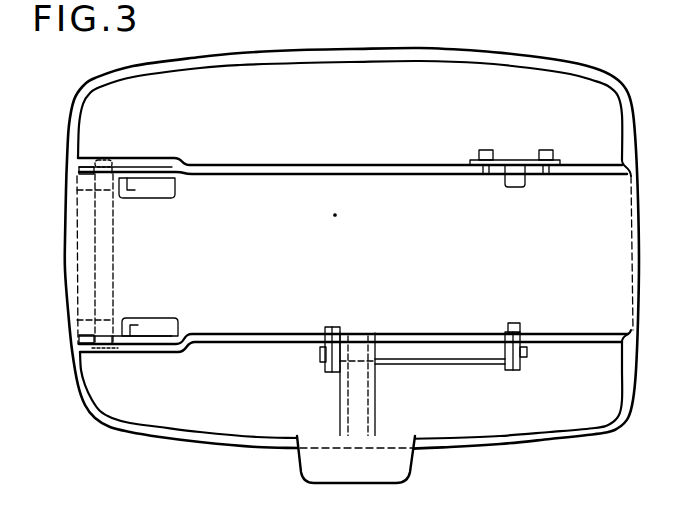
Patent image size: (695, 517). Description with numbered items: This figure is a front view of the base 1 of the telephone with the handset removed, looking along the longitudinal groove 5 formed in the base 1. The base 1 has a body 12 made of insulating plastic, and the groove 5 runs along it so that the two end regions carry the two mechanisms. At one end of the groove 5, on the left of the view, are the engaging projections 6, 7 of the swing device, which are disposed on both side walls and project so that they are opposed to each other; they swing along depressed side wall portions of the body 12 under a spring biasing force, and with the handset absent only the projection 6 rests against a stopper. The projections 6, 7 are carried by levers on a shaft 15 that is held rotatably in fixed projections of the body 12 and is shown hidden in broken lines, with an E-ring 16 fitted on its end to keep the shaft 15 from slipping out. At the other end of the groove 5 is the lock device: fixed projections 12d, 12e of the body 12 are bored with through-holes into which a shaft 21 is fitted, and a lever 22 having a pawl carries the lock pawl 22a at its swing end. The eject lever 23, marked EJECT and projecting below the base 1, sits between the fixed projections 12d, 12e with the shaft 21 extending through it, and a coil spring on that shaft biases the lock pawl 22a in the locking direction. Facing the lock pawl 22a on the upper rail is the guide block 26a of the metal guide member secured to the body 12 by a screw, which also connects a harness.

The base 1 is at (529, 52).
The body 12 is at (339, 127).
The groove 5 is at (343, 260).
The E-ring 16 is at (118, 160).
The engaging projection 7 is at (162, 190).
The engaging projection 6 is at (165, 325).
The shaft 15 is at (108, 255).
The guide block 26a is at (516, 188).
The eject lever 23 is at (407, 468).
The fixed projection 12e is at (328, 372).
The shaft 21 is at (433, 365).
The fixed projection 12d is at (509, 372).
The lock pawl 22a is at (518, 325).
The lever having a pawl 22 is at (528, 351).